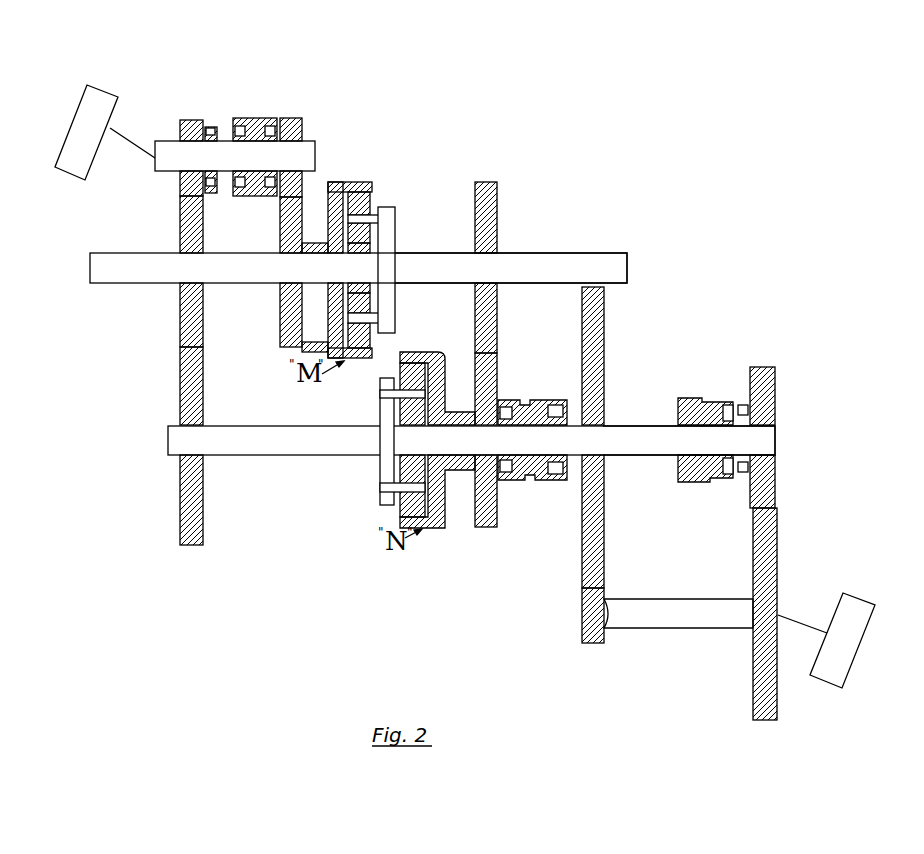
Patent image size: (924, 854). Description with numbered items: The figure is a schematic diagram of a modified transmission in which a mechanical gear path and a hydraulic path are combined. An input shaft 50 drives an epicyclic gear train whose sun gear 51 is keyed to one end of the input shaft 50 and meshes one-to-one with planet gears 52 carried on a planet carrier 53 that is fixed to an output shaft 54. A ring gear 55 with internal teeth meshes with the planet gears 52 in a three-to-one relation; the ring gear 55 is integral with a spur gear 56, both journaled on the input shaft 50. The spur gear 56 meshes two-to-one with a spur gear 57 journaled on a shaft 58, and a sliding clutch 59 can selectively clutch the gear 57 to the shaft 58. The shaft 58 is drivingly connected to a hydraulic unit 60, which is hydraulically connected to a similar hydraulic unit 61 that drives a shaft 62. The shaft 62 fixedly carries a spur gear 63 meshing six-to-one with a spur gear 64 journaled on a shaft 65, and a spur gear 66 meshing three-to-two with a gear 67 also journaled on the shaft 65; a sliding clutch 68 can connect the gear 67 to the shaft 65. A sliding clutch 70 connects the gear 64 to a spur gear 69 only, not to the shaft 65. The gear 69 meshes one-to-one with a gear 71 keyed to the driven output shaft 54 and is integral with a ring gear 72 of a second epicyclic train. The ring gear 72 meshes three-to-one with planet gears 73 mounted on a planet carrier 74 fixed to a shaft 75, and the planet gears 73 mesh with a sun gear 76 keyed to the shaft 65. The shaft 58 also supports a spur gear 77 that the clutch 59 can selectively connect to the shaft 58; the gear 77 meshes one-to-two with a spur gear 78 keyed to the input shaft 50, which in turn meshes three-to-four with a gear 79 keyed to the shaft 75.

The input shaft 50 is at (133, 285).
The sun gear 51 is at (352, 282).
The planet gears 52 is at (372, 212).
The planet carrier 53 is at (388, 246).
The output shaft 54 is at (432, 285).
The ring gear 55 is at (372, 172).
The spur gear 56 is at (284, 238).
The spur gear 57 is at (304, 128).
The shaft 58 is at (304, 160).
The sliding clutch 59 is at (262, 118).
The hydraulic unit 60 is at (82, 150).
The hydraulic unit 61 is at (853, 652).
The shaft 62 is at (702, 630).
The spur gear 63 is at (588, 625).
The spur gear 64 is at (587, 554).
The shaft 65 is at (625, 448).
The spur gear 66 is at (773, 554).
The gear 67 is at (773, 492).
The sliding clutch 68 is at (705, 483).
The spur gear 69 is at (497, 518).
The sliding clutch 70 is at (541, 482).
The gear 71 is at (497, 326).
The ring gear 72 is at (436, 530).
The planet gears 73 is at (405, 508).
The planet carrier 74 is at (380, 490).
The shaft 75 is at (331, 456).
The sun gear 76 is at (418, 456).
The spur gear 77 is at (196, 124).
The spur gear 78 is at (184, 232).
The gear 79 is at (185, 383).